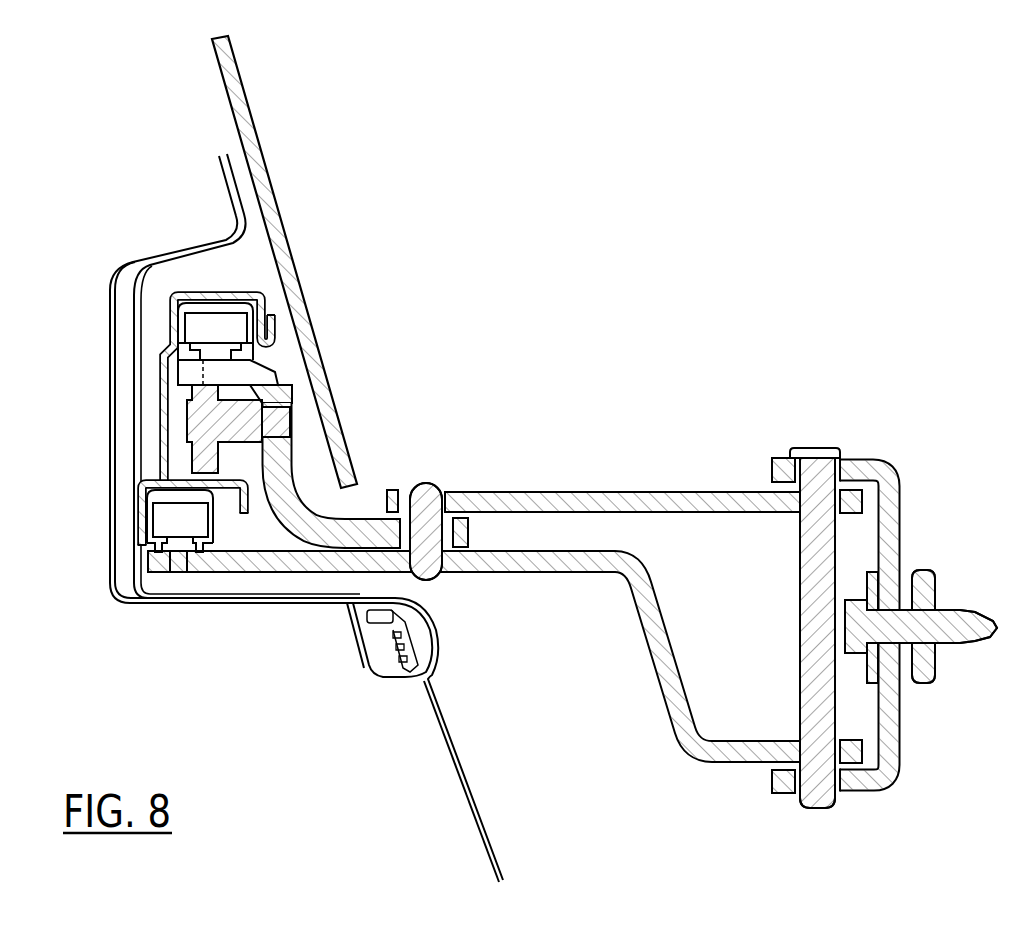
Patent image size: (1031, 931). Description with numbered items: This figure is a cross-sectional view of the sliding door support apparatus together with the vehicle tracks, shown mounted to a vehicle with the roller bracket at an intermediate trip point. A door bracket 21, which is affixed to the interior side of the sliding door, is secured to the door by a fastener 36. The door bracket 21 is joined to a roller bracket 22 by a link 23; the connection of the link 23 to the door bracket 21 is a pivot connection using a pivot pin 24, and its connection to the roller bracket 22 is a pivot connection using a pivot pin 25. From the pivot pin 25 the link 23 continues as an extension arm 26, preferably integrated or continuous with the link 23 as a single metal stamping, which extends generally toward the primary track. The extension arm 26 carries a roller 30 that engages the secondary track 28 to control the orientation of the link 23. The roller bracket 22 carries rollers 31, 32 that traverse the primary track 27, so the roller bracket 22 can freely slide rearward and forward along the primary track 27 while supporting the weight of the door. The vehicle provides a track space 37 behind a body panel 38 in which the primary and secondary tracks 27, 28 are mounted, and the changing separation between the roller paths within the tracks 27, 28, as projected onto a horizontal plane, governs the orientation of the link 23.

The door bracket 21 is at (888, 470).
The roller bracket 22 is at (316, 510).
The link 23 is at (645, 490).
The pivot pin 24 is at (818, 460).
The pivot pin 25 is at (430, 487).
The extension arm 26 is at (313, 565).
The primary track 27 is at (170, 332).
The secondary track 28 is at (124, 537).
The roller 30 is at (172, 542).
The roller 31 is at (200, 440).
The roller 32 is at (211, 318).
The fastener 36 is at (932, 603).
The track space 37 is at (288, 343).
The body panel 38 is at (268, 172).